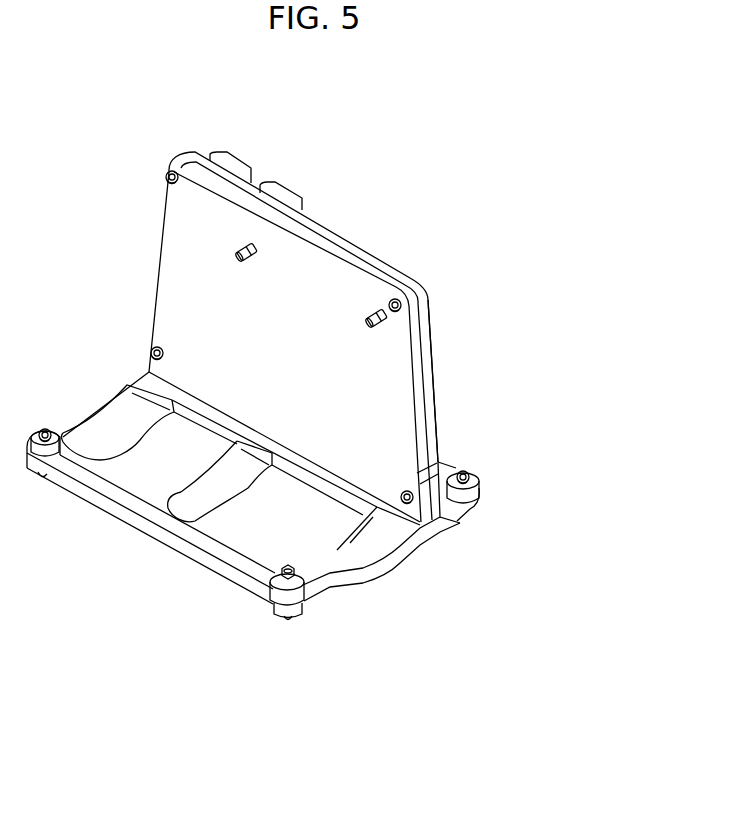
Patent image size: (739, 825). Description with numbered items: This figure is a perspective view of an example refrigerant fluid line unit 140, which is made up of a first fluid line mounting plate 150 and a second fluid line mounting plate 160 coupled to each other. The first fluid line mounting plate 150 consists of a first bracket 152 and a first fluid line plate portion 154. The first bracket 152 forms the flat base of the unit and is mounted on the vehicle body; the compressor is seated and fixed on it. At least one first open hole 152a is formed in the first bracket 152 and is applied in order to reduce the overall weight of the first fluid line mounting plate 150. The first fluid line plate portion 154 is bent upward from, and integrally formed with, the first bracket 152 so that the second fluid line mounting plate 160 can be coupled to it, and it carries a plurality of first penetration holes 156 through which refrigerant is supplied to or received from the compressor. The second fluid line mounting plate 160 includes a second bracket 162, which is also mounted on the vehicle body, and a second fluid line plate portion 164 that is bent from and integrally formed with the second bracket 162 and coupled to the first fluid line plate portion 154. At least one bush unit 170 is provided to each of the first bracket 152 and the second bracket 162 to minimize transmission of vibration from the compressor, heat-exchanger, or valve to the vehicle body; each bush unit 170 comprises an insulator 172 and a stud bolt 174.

The refrigerant fluid line unit 140 is at (375, 201).
The first fluid line mounting plate 150 is at (203, 692).
The first bracket 152 is at (343, 573).
The first open hole 152a is at (253, 513).
The first fluid line plate portion 154 is at (170, 303).
The first penetration holes 156 is at (238, 256).
The second fluid line mounting plate 160 is at (303, 692).
The second bracket 162 is at (450, 503).
The second fluid line plate portion 164 is at (427, 355).
The bush unit 170 is at (401, 692).
The insulator 172 is at (303, 600).
The stud bolt 174 is at (274, 604).